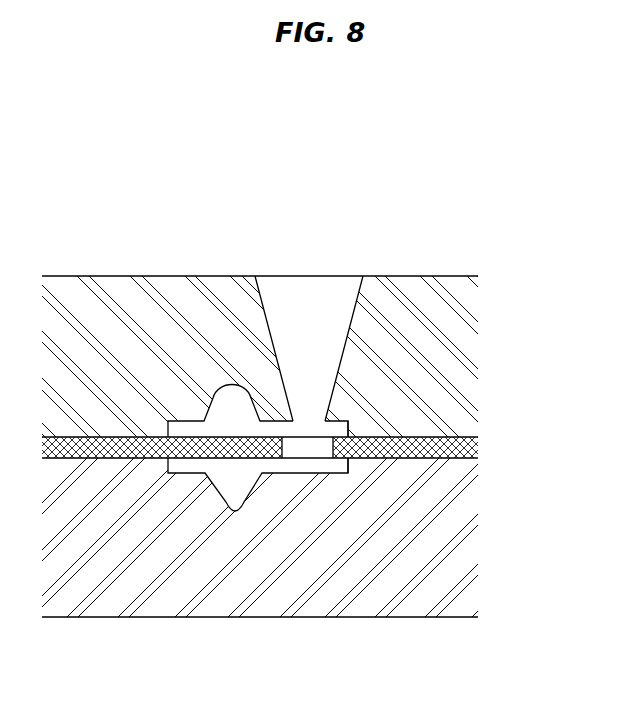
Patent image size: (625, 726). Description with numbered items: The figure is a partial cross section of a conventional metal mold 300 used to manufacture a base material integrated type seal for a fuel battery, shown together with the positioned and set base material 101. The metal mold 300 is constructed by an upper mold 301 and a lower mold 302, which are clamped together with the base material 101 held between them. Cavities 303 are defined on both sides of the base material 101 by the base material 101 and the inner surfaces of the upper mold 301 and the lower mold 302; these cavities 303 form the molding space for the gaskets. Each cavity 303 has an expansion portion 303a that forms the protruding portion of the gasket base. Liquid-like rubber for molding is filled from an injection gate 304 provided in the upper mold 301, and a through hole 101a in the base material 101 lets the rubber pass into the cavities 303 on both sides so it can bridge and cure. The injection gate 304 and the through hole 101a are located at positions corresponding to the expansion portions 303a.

The metal mold 300 is at (200, 272).
The upper mold 301 is at (127, 298).
The lower mold 302 is at (127, 593).
The cavity 303 is at (229, 408).
The expansion portion 303a is at (341, 422).
The injection gate 304 is at (318, 303).
The base material 101 is at (486, 448).
The through hole 101a is at (307, 448).